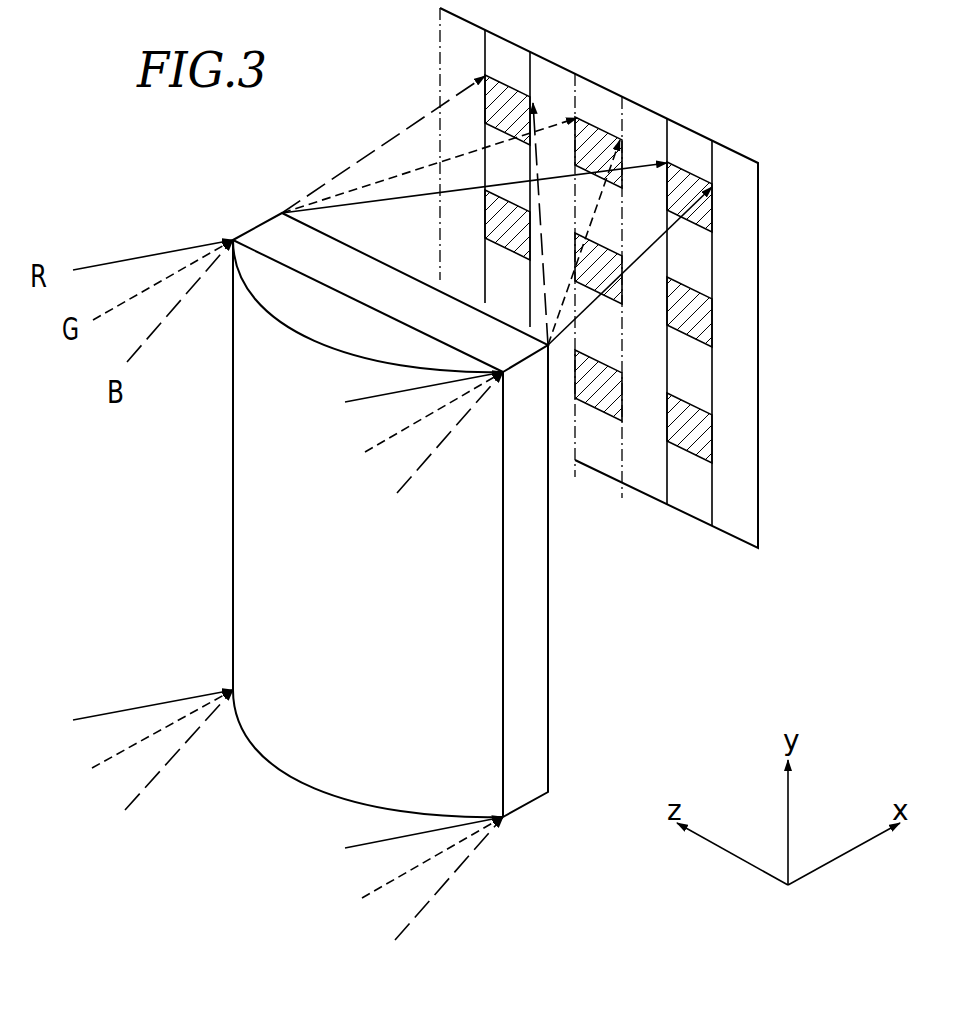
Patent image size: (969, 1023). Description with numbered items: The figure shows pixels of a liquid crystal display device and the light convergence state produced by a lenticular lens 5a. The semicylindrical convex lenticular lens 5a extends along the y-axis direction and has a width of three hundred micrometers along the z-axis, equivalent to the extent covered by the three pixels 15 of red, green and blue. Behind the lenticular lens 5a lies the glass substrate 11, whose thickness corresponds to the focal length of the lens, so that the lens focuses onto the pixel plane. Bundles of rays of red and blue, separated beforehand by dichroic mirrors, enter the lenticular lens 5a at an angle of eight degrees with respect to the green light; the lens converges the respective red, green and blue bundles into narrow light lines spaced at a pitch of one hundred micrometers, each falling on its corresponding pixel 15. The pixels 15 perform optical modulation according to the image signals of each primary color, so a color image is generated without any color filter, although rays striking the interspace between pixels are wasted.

The pixels 15 is at (438, 73).
The lenticular lens 5a is at (230, 523).
The glass substrate 11 is at (560, 631).